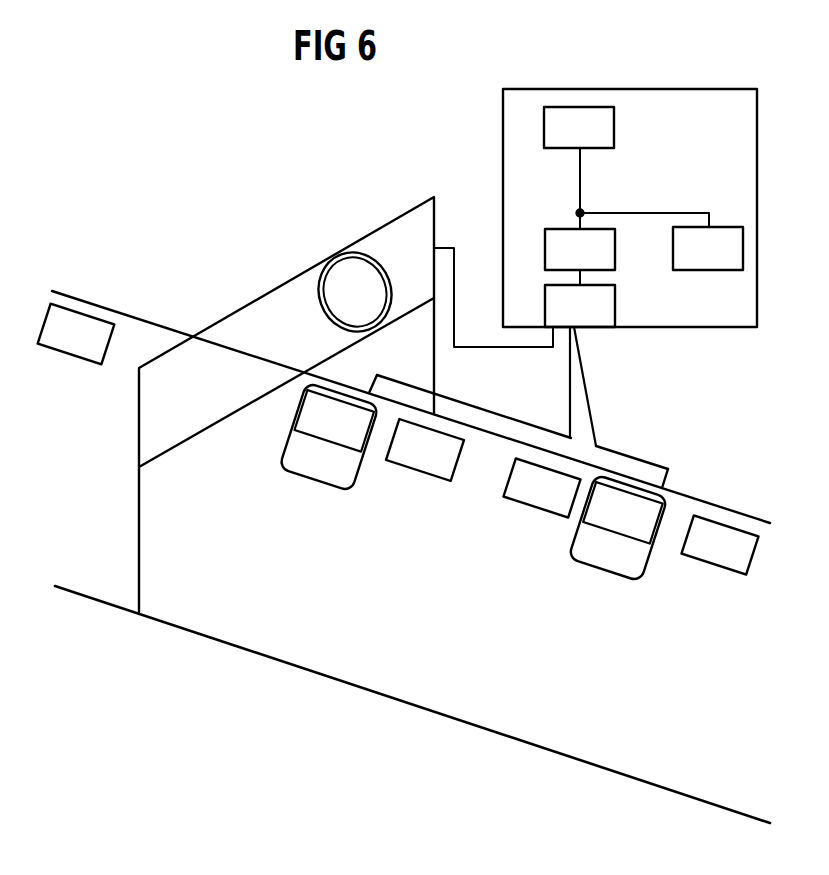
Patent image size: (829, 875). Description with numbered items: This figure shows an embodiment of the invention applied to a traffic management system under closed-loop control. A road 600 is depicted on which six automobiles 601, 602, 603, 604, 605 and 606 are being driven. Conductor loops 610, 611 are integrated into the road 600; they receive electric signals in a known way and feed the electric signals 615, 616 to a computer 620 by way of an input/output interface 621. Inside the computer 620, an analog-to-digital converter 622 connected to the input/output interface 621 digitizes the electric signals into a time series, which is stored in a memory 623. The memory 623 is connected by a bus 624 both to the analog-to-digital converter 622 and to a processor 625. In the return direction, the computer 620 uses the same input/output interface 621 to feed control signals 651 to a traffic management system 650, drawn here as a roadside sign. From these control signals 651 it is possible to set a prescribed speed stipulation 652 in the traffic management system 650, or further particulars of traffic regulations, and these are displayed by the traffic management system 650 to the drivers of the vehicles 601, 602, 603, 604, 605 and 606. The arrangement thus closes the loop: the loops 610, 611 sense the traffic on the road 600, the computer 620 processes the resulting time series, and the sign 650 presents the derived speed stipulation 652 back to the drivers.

The road 600 is at (515, 717).
The automobile 601 is at (76, 334).
The automobile 602 is at (334, 421).
The automobile 603 is at (425, 450).
The automobile 604 is at (541, 487).
The automobile 605 is at (623, 513).
The automobile 606 is at (719, 544).
The conductor loop 610 is at (329, 466).
The conductor loop 611 is at (617, 560).
The electric signal 615 is at (570, 387).
The electric signal 616 is at (589, 405).
The computer 620 is at (630, 238).
The input/output interface 621 is at (580, 306).
The analog-to-digital converter 622 is at (580, 249).
The memory 623 is at (579, 127).
The bus 624 is at (581, 177).
The processor 625 is at (708, 248).
The traffic management system 650 is at (358, 240).
The control signal 651 is at (456, 261).
The prescribed speed stipulation 652 is at (323, 323).